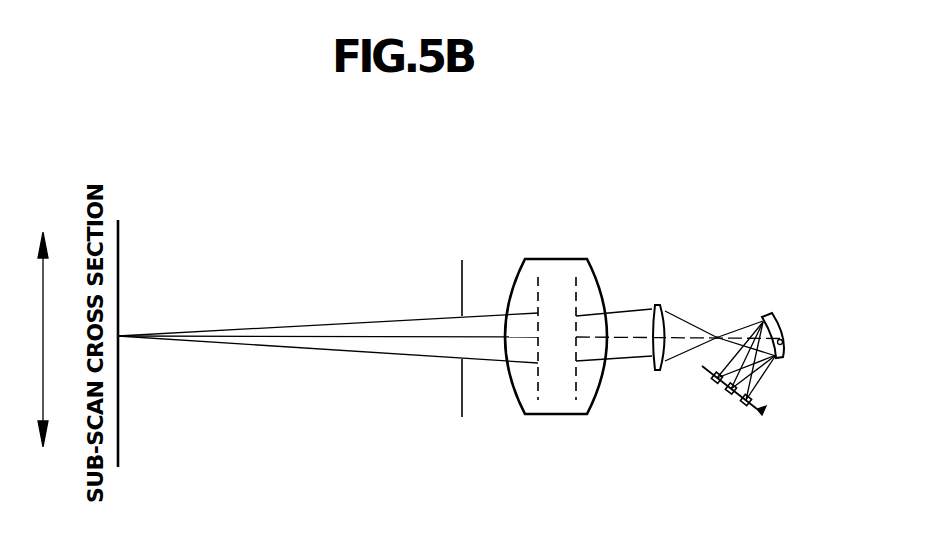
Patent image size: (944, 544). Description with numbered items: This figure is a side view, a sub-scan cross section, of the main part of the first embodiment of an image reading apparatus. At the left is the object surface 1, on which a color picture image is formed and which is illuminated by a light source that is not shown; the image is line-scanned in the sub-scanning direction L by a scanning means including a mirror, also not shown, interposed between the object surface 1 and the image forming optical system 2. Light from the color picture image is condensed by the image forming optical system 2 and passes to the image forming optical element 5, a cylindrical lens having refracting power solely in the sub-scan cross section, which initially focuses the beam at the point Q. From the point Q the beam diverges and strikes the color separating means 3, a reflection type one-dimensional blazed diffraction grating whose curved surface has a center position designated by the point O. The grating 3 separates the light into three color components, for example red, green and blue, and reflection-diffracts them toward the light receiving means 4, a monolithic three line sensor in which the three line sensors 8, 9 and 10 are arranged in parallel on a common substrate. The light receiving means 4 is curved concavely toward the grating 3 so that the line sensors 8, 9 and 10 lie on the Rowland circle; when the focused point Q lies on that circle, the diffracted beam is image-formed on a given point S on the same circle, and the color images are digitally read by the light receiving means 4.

The object surface 1 is at (118, 243).
The image forming optical system 2 is at (592, 243).
The color separating means 3 is at (780, 322).
The light receiving means 4 is at (764, 411).
The image forming optical element 5 is at (658, 304).
The line sensor 8 is at (708, 370).
The line sensor 9 is at (729, 393).
The line sensor 10 is at (746, 404).
The image-formed point S is at (727, 386).
The focused point Q is at (717, 336).
The center point of curved surface O is at (783, 344).
The sub-scanning direction L is at (34, 339).